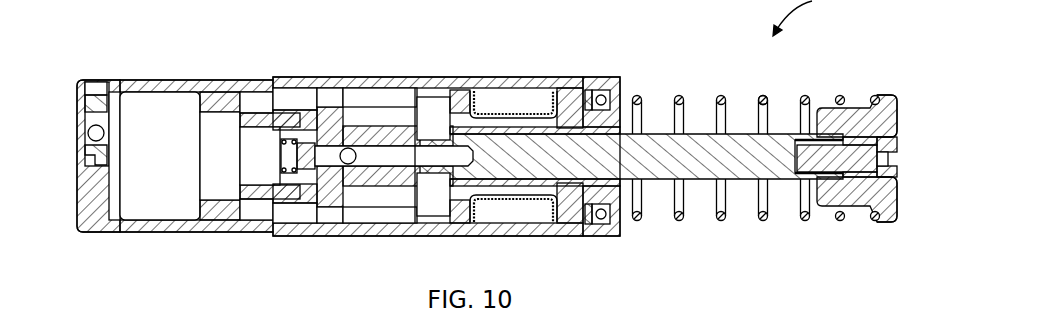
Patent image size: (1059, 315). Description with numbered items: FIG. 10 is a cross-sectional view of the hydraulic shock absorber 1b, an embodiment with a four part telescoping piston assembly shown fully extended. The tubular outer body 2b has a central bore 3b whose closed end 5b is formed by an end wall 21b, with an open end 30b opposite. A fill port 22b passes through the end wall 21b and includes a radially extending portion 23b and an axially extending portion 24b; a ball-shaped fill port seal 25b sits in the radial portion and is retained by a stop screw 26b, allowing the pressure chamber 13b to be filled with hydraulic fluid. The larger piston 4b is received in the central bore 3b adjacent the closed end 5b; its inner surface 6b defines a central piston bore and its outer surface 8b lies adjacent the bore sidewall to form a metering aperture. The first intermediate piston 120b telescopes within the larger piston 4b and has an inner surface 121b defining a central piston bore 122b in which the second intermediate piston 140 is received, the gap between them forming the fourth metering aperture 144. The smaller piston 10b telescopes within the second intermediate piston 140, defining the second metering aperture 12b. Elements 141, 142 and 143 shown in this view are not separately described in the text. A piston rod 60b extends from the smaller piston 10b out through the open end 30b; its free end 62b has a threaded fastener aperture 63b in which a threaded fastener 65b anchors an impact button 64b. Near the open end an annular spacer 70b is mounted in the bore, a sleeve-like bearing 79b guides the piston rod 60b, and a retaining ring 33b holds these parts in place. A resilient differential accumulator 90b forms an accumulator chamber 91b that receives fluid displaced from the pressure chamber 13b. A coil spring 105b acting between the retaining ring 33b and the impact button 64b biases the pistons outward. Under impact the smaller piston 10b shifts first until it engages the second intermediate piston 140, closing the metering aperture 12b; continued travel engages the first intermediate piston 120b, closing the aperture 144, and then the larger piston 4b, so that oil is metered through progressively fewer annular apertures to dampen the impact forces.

The hydraulic shock absorber 1b is at (733, 314).
The outer body 2b is at (510, 92).
The central bore 3b is at (150, 120).
The larger piston 4b is at (232, 78).
The closed end 5b is at (126, 186).
The inner surface 6b is at (257, 97).
The outer surface 8b is at (220, 87).
The smaller piston 10b is at (430, 118).
The second metering aperture 12b is at (366, 140).
The pressure chamber 13b is at (160, 156).
The end wall 21b is at (88, 200).
The fill port 22b is at (86, 158).
The radially extending portion 23b is at (88, 104).
The axially extending portion 24b is at (112, 95).
The fill port seal 25b is at (92, 133).
The stop screw 26b is at (95, 82).
The open end 30b is at (615, 90).
The retaining ring 33b is at (588, 91).
The piston rod 60b is at (745, 187).
The free end 62b is at (858, 110).
The threaded fastener aperture 63b is at (837, 177).
The impact button 64b is at (887, 95).
The threaded fastener 65b is at (882, 222).
The spacer 70b is at (432, 221).
The bearing 79b is at (598, 98).
The differential accumulator 90b is at (513, 91).
The accumulator chamber 91b is at (527, 200).
The spring 105b is at (764, 100).
The first intermediate piston 120b is at (287, 112).
The inner surface 121b is at (288, 221).
The central piston bore 122b is at (258, 128).
The second intermediate piston 140 is at (360, 128).
The valve piston 141 is at (288, 164).
The valve seat 142 is at (273, 163).
The valve spring 143 is at (382, 187).
The fourth metering aperture 144 is at (347, 205).